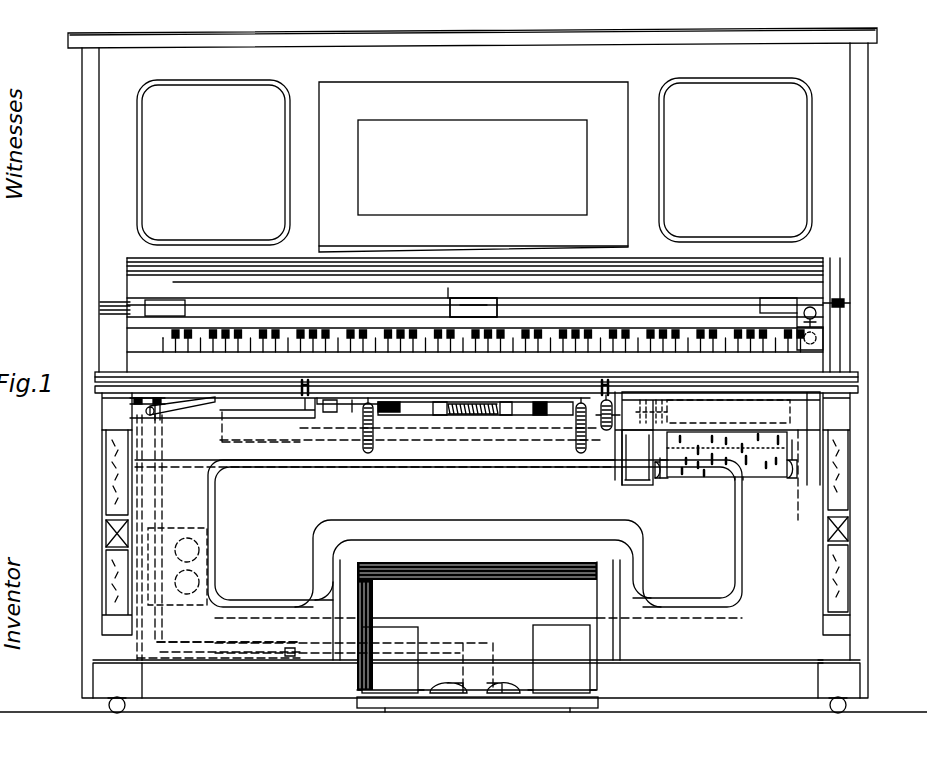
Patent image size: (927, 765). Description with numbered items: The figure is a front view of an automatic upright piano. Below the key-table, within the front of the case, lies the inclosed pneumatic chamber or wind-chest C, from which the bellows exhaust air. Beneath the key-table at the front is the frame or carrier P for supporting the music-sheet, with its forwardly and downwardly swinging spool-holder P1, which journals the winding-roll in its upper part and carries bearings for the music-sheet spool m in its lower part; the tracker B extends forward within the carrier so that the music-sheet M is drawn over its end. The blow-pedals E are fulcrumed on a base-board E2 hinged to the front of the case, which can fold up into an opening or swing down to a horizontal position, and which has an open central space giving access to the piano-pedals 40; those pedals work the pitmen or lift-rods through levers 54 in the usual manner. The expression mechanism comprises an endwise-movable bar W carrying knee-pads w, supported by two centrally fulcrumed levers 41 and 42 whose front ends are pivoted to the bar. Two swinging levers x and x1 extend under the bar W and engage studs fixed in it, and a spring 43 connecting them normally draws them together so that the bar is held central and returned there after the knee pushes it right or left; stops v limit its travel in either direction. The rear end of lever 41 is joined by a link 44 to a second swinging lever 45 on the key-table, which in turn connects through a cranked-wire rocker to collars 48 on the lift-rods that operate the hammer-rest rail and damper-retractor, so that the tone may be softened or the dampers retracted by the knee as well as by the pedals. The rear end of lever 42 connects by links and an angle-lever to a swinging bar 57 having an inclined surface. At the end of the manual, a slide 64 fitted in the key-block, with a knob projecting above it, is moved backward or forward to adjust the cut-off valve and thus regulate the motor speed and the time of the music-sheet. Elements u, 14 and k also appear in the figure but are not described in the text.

The slide 64 is at (812, 322).
The collars 48 is at (130, 400).
The second swinging lever 45 is at (215, 403).
The link 44 is at (277, 408).
The lever 41 is at (323, 410).
The hook u is at (385, 384).
The stops v is at (604, 384).
The expression-bar W is at (353, 400).
The swinging bar 57 is at (475, 421).
The swinging lever x is at (437, 414).
The spring 43 is at (475, 415).
The swinging lever x1 is at (507, 414).
The lever 42 is at (540, 410).
The knee-pads w is at (474, 430).
The pneumatic 14 is at (605, 428).
The spool-holder P1 is at (713, 407).
The carrier frame P is at (617, 480).
The music-sheet M is at (721, 472).
The music-sheet spool m is at (668, 478).
The tracker B is at (797, 447).
The wind-chest C is at (477, 626).
The blow-pedals E is at (477, 659).
The piano-pedals 40 is at (475, 678).
The base-board E2 is at (477, 705).
The levers 54 is at (228, 652).
The key k is at (452, 336).